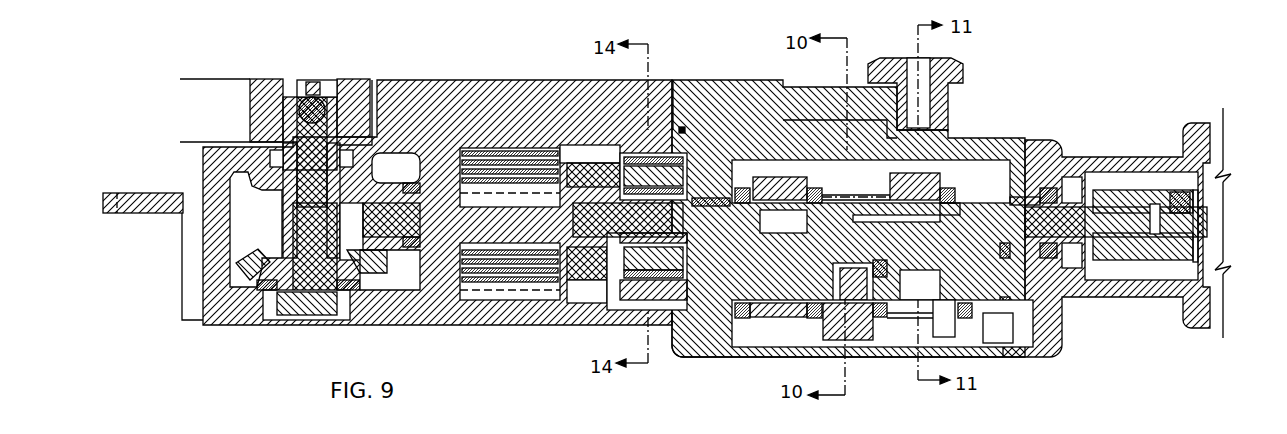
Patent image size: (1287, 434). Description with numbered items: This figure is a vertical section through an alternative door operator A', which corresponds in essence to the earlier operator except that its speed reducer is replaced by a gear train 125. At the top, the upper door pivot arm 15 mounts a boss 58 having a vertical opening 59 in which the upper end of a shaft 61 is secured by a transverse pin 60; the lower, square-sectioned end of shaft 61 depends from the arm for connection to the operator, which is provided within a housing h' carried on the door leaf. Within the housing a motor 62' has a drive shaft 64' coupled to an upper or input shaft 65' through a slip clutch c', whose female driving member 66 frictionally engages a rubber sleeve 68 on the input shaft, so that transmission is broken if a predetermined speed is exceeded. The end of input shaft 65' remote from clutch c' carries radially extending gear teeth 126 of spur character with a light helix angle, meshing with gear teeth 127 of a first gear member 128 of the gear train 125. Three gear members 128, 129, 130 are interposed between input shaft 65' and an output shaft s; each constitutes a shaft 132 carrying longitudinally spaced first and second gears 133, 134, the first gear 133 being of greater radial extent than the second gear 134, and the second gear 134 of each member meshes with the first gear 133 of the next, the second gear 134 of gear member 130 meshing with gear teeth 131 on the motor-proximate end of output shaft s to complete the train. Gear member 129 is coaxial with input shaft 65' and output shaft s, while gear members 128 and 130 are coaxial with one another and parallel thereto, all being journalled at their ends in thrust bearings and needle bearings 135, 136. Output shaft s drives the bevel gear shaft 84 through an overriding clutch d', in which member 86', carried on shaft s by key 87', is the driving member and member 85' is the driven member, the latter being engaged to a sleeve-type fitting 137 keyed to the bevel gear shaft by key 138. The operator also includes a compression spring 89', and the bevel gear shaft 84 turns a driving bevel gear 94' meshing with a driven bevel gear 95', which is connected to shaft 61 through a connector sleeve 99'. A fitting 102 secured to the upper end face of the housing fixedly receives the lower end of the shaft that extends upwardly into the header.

The upper door pivot arm 15 is at (214, 78).
The transverse pin 60 is at (303, 103).
The vertical opening 59 is at (323, 78).
The shaft 61 is at (331, 79).
The boss 58 is at (361, 78).
The connector sleeve 99' is at (296, 200).
The driven bevel gear 95' is at (256, 229).
The bevel gear shaft 84 is at (355, 229).
The driving bevel gear 94' is at (383, 271).
The compression spring 89' is at (510, 298).
The key 138 is at (585, 253).
The sleeve-type fitting 137 is at (587, 240).
The key 87' is at (626, 301).
The driving member 86' is at (645, 312).
The driven member 85' is at (657, 335).
The housing h' is at (706, 360).
The overriding clutch d' is at (663, 113).
The output shaft s is at (702, 220).
The fitting 102 is at (948, 104).
The gear teeth 131 is at (752, 183).
The gear train 125 is at (881, 197).
The second gear member 129 is at (871, 205).
The needle bearing 136 is at (948, 192).
The thrust bearing 135 is at (951, 200).
The gear teeth 126 is at (952, 212).
The third gear member 130 is at (762, 306).
The shaft 132 is at (818, 307).
The second gear 134 is at (912, 315).
The first gear member 128 is at (956, 342).
The gear teeth 127 is at (968, 330).
The first gear 133 is at (965, 330).
The door operator A' is at (871, 395).
The motor 62' is at (1136, 240).
The slip clutch c' is at (1143, 154).
The input shaft 65' is at (1143, 216).
The drive shaft 64' is at (1145, 217).
The rubber sleeve 68 is at (1155, 247).
The female driving member 66 is at (1160, 260).